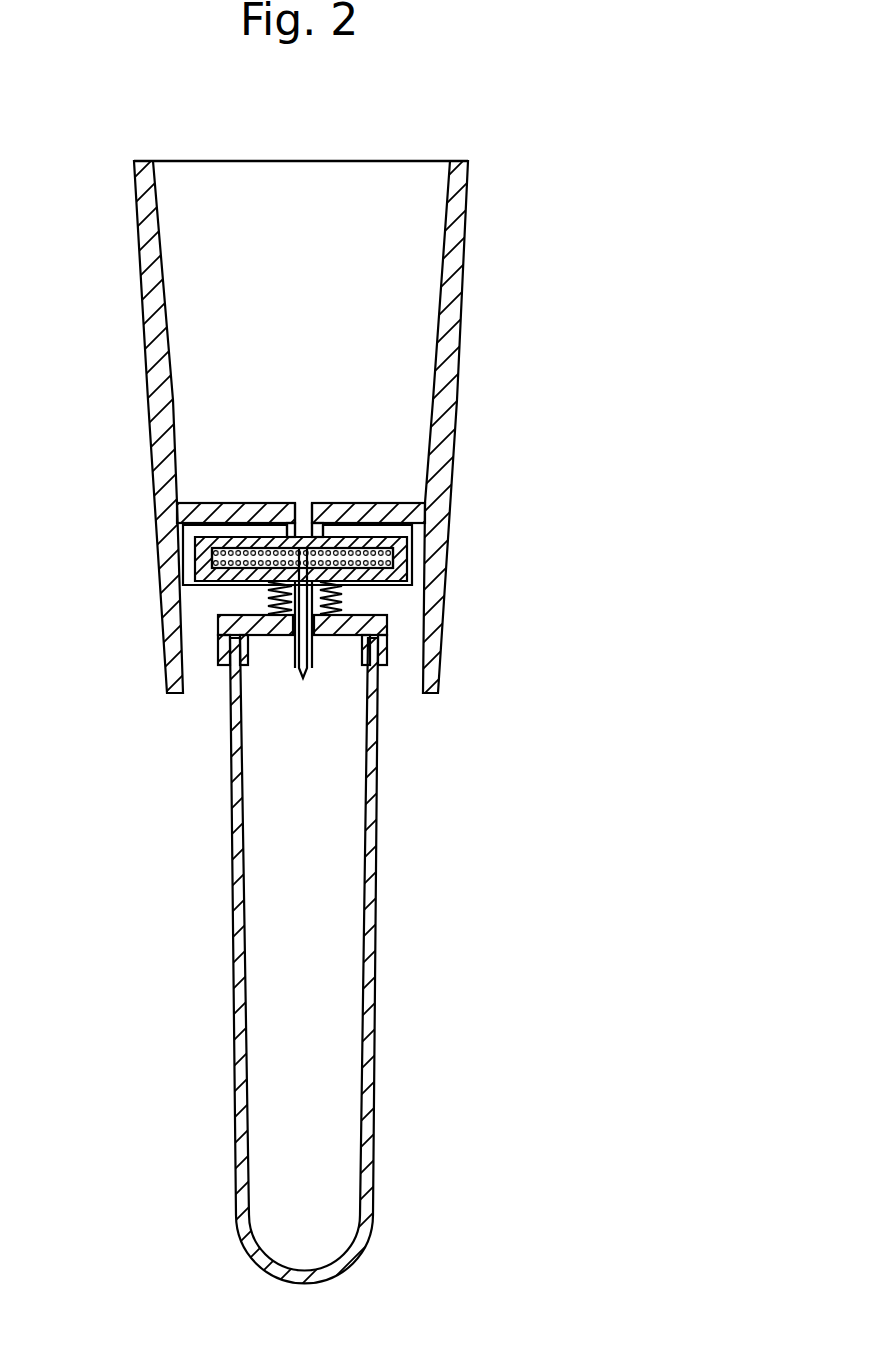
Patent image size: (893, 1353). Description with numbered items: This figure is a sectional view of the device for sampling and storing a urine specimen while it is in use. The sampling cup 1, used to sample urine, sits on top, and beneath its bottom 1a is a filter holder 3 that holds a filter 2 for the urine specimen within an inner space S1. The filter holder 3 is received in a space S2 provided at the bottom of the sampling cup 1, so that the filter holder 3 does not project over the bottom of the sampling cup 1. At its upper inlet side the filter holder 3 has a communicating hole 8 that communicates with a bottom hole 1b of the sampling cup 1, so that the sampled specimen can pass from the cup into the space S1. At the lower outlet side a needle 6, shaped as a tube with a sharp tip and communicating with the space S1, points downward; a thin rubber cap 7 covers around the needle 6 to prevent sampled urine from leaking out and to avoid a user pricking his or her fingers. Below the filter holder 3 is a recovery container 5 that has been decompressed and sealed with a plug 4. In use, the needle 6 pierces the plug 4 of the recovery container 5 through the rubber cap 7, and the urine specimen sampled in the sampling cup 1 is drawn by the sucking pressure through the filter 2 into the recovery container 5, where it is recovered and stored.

The sampling cup 1 is at (473, 379).
The bottom of the sampling cup 1a is at (193, 528).
The bottom hole of the sampling cup 1b is at (307, 513).
The filter 2 is at (393, 553).
The filter holder 3 is at (396, 586).
The plug 4 is at (386, 628).
The recovery container 5 is at (386, 986).
The needle 6 is at (297, 672).
The rubber cap 7 is at (268, 592).
The communicating hole 8 is at (282, 533).
The space S1 is at (202, 590).
The space S2 is at (400, 688).